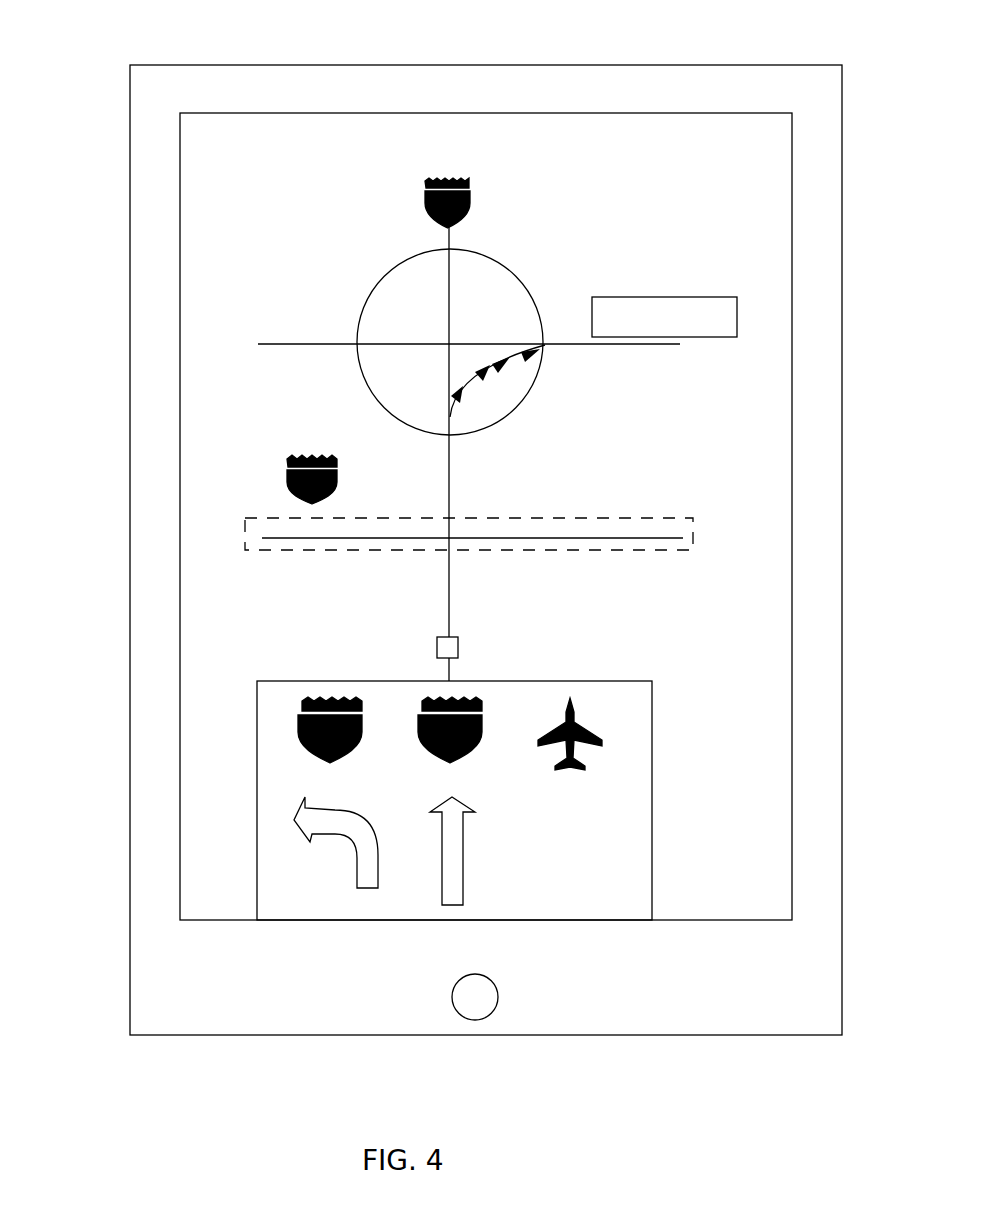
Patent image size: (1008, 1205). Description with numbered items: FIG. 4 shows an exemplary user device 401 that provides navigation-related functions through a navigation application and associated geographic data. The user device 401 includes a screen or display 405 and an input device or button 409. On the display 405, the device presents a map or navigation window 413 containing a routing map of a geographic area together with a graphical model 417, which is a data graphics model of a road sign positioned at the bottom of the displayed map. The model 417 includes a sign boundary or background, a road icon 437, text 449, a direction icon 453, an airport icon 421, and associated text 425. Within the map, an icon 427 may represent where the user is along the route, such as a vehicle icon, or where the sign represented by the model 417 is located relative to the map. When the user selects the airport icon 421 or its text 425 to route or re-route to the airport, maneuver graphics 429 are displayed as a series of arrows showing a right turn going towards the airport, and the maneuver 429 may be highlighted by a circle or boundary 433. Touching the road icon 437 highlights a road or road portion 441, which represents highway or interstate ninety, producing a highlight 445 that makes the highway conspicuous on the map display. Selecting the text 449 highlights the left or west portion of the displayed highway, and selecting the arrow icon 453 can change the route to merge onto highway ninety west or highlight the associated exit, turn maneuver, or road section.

The user device 401 is at (775, 65).
The display 405 is at (792, 211).
The button 409 is at (498, 997).
The map or navigation window 413 is at (262, 243).
The graphical model 417 is at (535, 681).
The airport icon 421 is at (580, 720).
The text 425 is at (603, 786).
The icon 427 is at (458, 648).
The maneuver graphics 429 is at (473, 368).
The circle or boundary 433 is at (473, 251).
The road icon 437 is at (346, 698).
The road representation 441 is at (362, 538).
The highlight 445 is at (593, 518).
The text 449 is at (320, 780).
The direction icon 453 is at (345, 843).